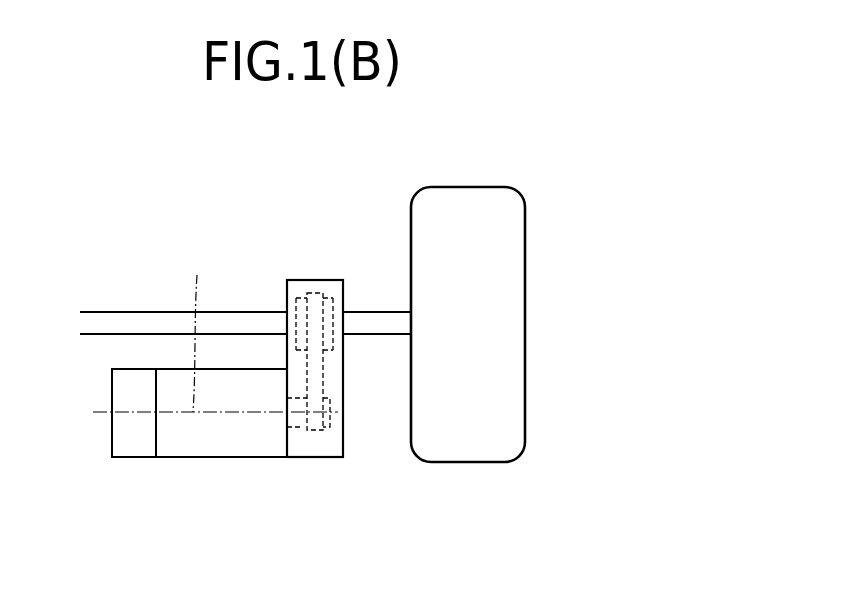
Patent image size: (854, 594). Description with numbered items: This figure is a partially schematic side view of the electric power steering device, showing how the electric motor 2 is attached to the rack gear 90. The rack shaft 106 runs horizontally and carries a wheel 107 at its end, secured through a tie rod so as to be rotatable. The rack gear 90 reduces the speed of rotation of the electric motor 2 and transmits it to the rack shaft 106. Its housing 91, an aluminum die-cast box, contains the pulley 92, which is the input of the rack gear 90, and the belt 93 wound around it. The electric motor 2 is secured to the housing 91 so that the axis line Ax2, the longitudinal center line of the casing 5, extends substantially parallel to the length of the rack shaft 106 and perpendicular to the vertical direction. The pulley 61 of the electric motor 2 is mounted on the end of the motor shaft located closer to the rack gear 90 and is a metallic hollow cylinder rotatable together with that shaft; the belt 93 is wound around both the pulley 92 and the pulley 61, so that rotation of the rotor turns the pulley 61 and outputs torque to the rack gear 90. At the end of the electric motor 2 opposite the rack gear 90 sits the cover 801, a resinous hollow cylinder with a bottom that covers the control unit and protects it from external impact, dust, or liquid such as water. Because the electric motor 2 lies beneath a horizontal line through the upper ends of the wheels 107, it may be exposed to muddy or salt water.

The wheel 107 is at (463, 198).
The rack shaft 106 is at (114, 322).
The axis line Ax2 is at (195, 330).
The pulley 92 is at (335, 300).
The belt 93 is at (320, 378).
The rack gear 90 is at (332, 405).
The housing 91 is at (332, 457).
The pulley 61 is at (305, 427).
The casing 5 is at (228, 457).
The cover 801 is at (132, 457).
The electric motor 2 is at (252, 398).